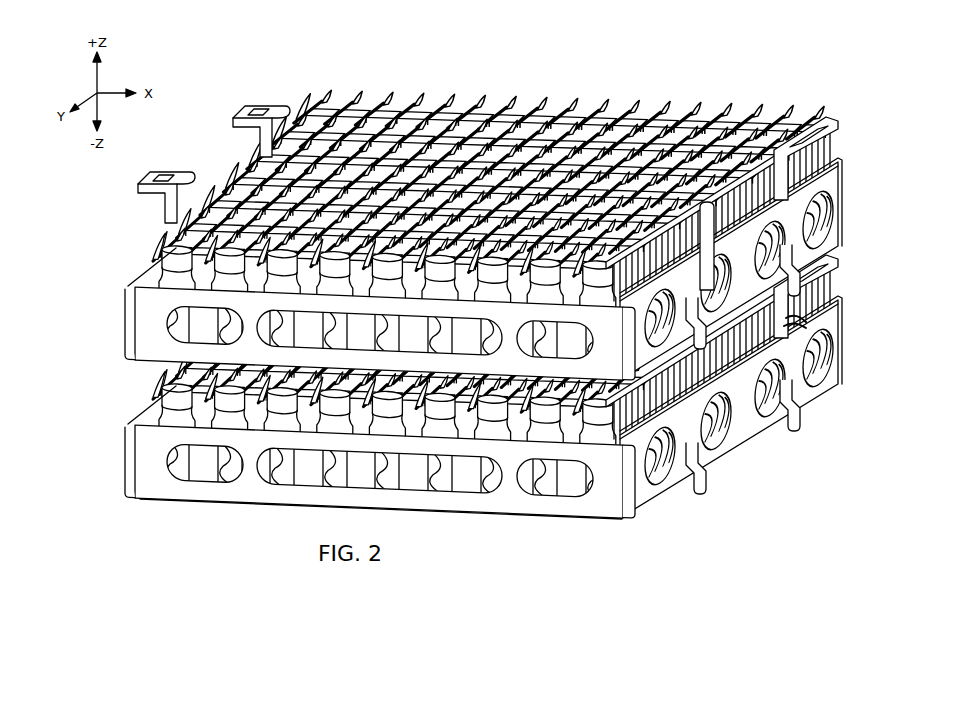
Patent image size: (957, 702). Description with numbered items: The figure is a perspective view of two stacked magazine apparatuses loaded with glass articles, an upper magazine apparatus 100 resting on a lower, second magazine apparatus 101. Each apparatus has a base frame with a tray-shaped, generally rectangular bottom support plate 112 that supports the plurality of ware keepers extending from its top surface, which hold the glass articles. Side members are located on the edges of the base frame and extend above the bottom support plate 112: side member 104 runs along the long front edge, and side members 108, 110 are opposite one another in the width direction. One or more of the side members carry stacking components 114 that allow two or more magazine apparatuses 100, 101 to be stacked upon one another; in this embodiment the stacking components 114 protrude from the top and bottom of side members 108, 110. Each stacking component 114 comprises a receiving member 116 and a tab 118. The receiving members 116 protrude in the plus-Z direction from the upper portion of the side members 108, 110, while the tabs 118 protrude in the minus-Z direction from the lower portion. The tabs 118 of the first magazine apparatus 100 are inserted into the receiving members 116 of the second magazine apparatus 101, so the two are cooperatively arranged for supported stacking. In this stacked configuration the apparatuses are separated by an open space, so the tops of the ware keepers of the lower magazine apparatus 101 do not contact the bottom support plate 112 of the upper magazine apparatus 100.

The magazine apparatus 100 is at (862, 165).
The second magazine apparatus 101 is at (876, 305).
The side member 104 is at (140, 330).
The side member 108 is at (147, 283).
The side member 110 is at (838, 200).
The bottom support plate 112 is at (462, 514).
The stacking component 114 is at (820, 322).
The receiving member 116 is at (252, 118).
The tab 118 is at (812, 302).